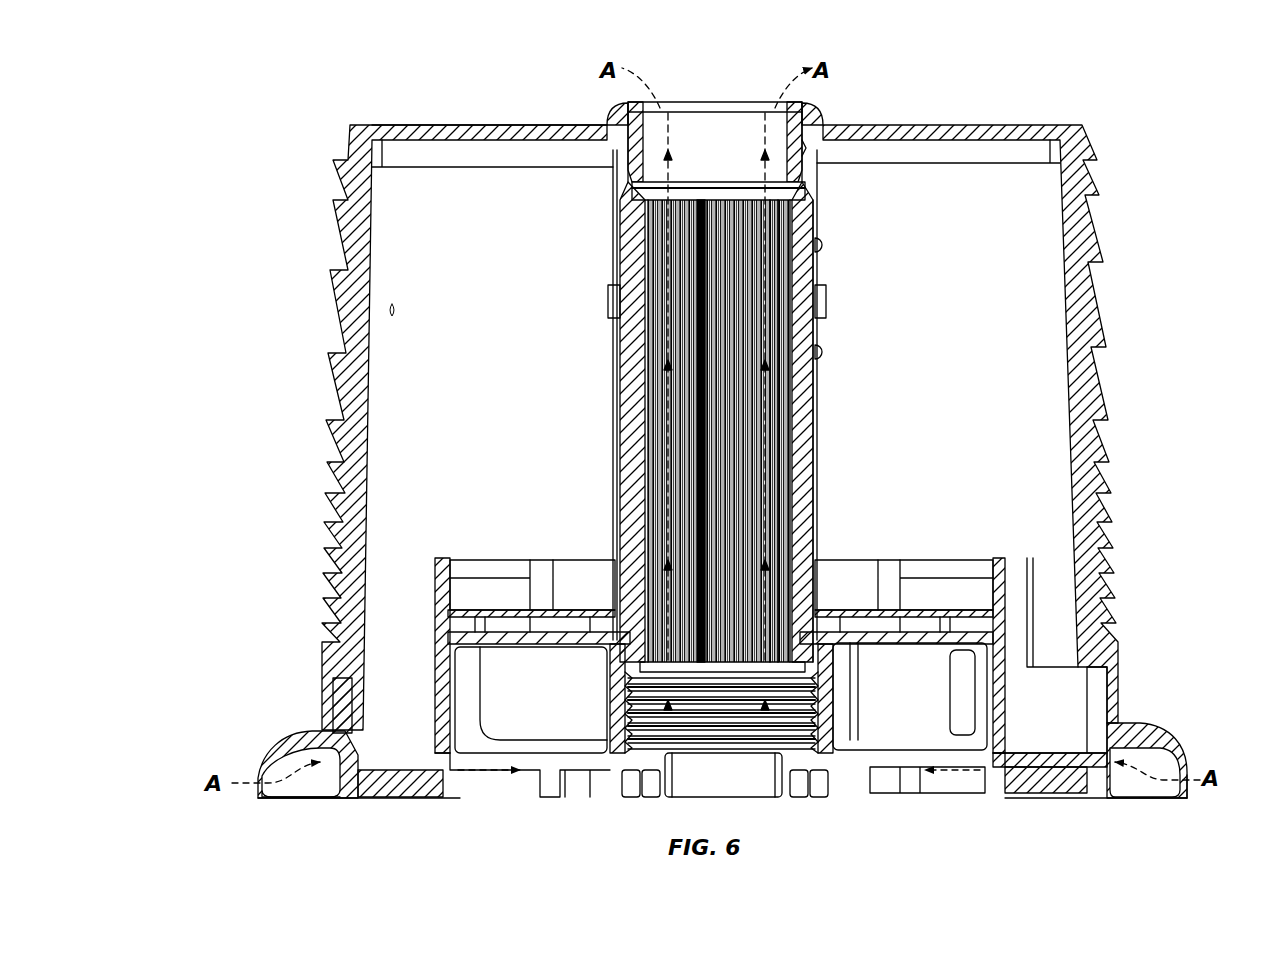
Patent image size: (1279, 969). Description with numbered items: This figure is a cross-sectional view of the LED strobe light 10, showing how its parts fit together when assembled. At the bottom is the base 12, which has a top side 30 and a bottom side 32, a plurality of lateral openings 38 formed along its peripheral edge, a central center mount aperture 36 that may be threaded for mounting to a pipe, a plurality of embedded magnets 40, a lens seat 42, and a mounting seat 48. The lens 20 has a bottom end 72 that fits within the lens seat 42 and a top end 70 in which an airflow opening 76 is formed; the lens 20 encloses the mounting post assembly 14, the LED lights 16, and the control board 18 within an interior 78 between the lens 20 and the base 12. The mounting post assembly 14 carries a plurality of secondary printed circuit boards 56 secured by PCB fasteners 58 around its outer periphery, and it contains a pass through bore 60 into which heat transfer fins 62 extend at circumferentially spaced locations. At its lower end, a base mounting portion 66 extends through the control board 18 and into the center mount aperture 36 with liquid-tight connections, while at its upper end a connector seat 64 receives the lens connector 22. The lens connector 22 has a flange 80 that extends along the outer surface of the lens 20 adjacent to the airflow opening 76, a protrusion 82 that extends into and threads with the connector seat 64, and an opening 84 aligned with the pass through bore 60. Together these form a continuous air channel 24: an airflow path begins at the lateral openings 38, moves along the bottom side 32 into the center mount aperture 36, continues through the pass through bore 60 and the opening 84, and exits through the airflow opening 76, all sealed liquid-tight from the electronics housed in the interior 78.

The LED strobe light 10 is at (1182, 197).
The base 12 is at (1182, 728).
The mounting post assembly 14 is at (830, 398).
The LED lights 16 is at (606, 302).
The control board 18 is at (868, 600).
The lens 20 is at (1095, 128).
The lens connector 22 is at (828, 98).
The air channel 24 is at (656, 372).
The top side 30 is at (285, 740).
The bottom side 32 is at (446, 800).
The center mount aperture 36 is at (790, 760).
The lateral openings 38 is at (262, 797).
The embedded magnets 40 is at (405, 760).
The lens seat 42 is at (1118, 692).
The mounting seat 48 is at (905, 620).
The secondary printed circuit boards 56 is at (818, 212).
The PCB fasteners 58 is at (825, 245).
The pass through bore 60 is at (708, 520).
The heat transfer fins 62 is at (780, 472).
The connector seat 64 is at (806, 150).
The base mounting portion 66 is at (848, 666).
The top end 70 is at (352, 126).
The bottom end 72 is at (333, 690).
The airflow opening 76 is at (618, 106).
The interior 78 is at (1004, 385).
The flange 80 is at (827, 112).
The protrusion 82 is at (808, 186).
The opening 84 is at (716, 130).